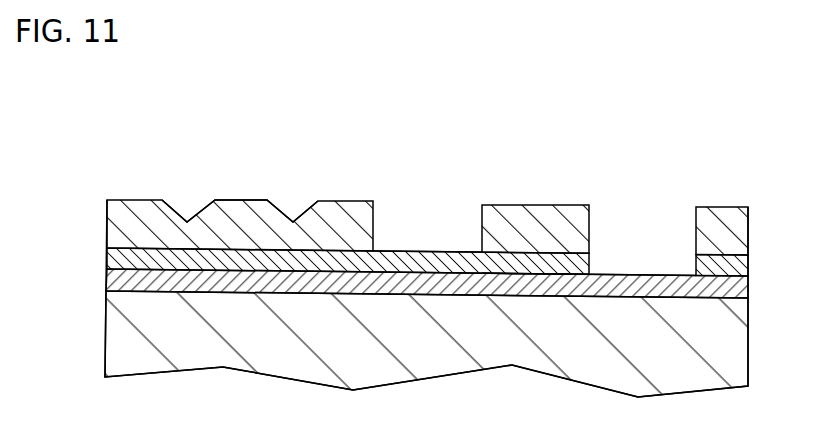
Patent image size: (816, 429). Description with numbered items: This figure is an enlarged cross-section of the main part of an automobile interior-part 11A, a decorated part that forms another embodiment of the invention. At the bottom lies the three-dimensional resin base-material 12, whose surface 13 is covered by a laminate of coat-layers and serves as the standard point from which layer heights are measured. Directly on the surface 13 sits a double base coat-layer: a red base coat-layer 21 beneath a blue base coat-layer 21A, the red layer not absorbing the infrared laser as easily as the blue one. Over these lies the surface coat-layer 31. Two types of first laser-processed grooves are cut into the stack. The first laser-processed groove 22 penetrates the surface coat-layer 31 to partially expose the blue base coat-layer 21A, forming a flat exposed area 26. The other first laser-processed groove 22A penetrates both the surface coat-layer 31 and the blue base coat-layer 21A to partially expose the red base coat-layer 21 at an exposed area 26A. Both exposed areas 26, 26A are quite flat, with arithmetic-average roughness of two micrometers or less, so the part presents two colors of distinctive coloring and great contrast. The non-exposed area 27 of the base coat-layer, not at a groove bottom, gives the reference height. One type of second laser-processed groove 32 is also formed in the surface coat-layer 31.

The automobile interior-part 11A is at (82, 178).
The resin base-material 12 is at (137, 320).
The surface of the resin base-material 13 is at (162, 290).
The base coat-layer 21 is at (117, 284).
The base coat-layer 21A is at (121, 254).
The first laser-processed groove 22 is at (482, 242).
The first laser-processed groove 22A is at (695, 245).
The exposed area 26 is at (395, 251).
The exposed area 26A is at (610, 275).
The non-exposed area 27 is at (527, 273).
The surface coat-layer 31 is at (121, 219).
The second laser-processed groove 32 is at (198, 212).